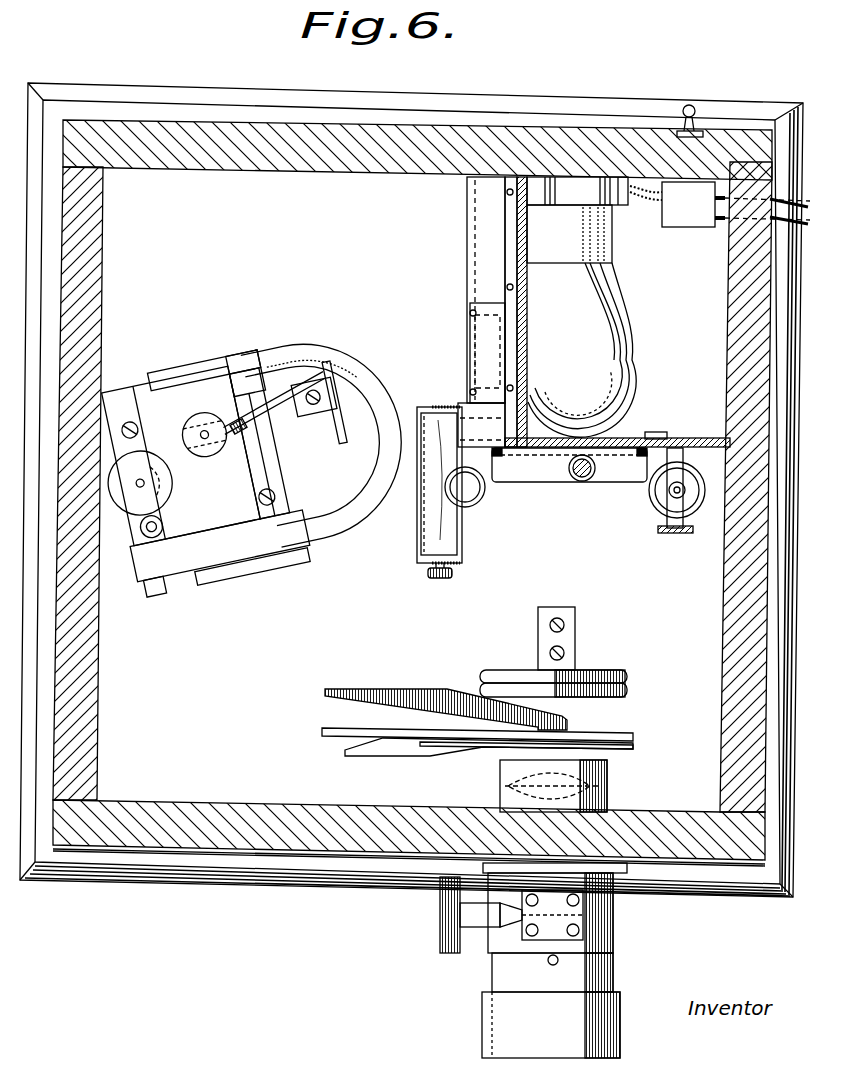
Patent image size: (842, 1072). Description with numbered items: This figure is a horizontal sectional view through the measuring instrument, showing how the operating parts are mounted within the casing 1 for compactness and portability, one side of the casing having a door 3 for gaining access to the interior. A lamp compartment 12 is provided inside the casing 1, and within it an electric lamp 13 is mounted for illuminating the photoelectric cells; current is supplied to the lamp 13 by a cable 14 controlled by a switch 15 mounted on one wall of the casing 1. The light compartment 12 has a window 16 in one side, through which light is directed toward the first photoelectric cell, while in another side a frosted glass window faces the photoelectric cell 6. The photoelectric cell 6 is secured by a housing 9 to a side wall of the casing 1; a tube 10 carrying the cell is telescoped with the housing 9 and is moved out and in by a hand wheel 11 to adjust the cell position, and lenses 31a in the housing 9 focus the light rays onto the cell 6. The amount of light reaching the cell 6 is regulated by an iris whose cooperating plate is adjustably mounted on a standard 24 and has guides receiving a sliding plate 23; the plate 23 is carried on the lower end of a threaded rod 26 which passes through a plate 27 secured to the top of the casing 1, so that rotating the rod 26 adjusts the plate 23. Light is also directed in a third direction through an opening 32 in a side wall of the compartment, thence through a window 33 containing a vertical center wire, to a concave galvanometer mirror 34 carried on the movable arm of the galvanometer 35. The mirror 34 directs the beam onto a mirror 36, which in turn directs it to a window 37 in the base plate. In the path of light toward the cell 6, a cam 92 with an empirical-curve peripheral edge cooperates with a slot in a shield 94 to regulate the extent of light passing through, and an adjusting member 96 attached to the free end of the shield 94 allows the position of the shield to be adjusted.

The casing 1 is at (237, 838).
The door 3 is at (728, 612).
The photoelectric cell 6 is at (500, 1013).
The housing 9 is at (613, 898).
The tube 10 is at (613, 975).
The hand wheel 11 is at (438, 930).
The lamp compartment 12 is at (630, 272).
The electric lamp 13 is at (630, 380).
The cable 14 is at (712, 211).
The switch 15 is at (688, 228).
The window 16 is at (480, 362).
The plate 23 is at (528, 468).
The standard 24 is at (672, 493).
The rod 26 is at (580, 480).
The plate 27 is at (626, 438).
The lenses 31a is at (598, 762).
The opening 32 is at (470, 372).
The window 33 is at (326, 412).
The concave galvanometer mirror 34 is at (165, 483).
The galvanometer 35 is at (173, 565).
The mirror 36 is at (425, 545).
The window 37 is at (627, 685).
The cam 92 is at (322, 732).
The shield 94 is at (345, 753).
The adjusting member 96 is at (395, 690).